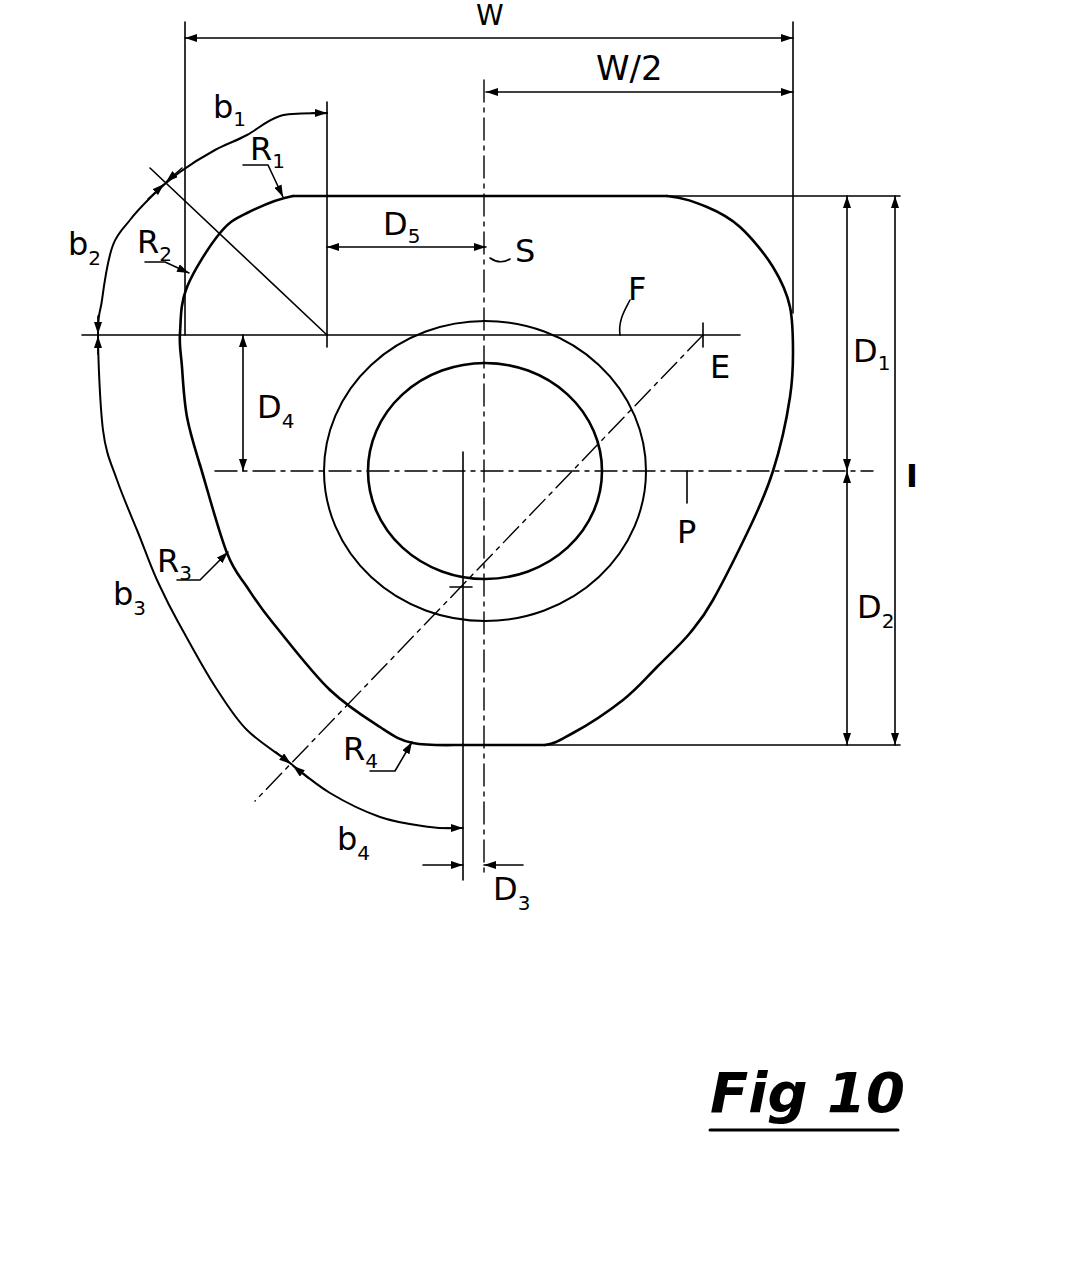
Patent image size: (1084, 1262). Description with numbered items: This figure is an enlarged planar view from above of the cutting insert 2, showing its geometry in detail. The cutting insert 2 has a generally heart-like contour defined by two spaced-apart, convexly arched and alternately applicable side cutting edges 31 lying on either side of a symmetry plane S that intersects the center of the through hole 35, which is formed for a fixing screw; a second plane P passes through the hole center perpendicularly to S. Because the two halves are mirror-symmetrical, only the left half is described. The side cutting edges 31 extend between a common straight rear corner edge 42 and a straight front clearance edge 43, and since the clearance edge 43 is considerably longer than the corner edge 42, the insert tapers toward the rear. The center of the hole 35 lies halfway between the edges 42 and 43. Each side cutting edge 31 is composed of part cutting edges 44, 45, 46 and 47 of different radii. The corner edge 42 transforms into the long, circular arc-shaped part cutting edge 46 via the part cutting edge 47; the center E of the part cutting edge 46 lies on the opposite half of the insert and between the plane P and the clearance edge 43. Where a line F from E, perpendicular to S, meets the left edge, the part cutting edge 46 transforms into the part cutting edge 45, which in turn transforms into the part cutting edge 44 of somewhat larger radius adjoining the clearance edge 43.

The cutting insert 2 is at (448, 503).
The side cutting edge 31 is at (745, 548).
The through hole 35 is at (556, 537).
The rear corner edge 42 is at (470, 746).
The front clearance edge 43 is at (408, 196).
The part cutting edge 44 is at (262, 211).
The part cutting edge 45 is at (190, 296).
The part cutting edge 46 is at (275, 623).
The part cutting edge 47 is at (393, 733).